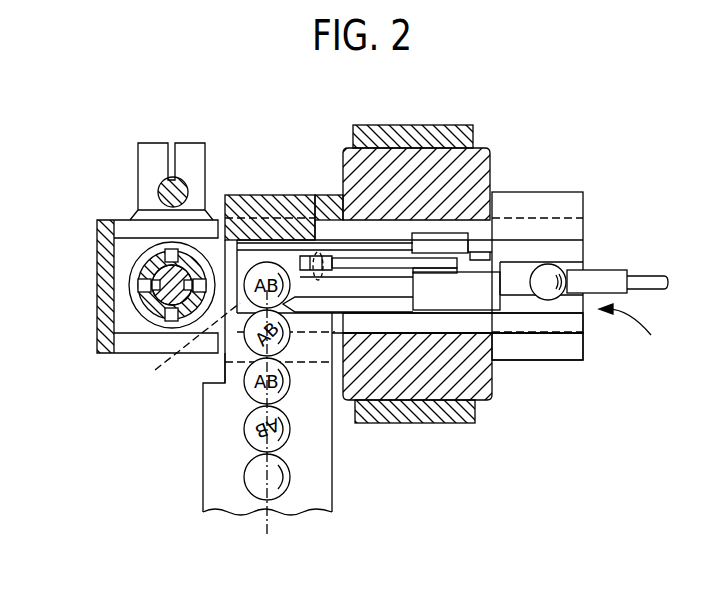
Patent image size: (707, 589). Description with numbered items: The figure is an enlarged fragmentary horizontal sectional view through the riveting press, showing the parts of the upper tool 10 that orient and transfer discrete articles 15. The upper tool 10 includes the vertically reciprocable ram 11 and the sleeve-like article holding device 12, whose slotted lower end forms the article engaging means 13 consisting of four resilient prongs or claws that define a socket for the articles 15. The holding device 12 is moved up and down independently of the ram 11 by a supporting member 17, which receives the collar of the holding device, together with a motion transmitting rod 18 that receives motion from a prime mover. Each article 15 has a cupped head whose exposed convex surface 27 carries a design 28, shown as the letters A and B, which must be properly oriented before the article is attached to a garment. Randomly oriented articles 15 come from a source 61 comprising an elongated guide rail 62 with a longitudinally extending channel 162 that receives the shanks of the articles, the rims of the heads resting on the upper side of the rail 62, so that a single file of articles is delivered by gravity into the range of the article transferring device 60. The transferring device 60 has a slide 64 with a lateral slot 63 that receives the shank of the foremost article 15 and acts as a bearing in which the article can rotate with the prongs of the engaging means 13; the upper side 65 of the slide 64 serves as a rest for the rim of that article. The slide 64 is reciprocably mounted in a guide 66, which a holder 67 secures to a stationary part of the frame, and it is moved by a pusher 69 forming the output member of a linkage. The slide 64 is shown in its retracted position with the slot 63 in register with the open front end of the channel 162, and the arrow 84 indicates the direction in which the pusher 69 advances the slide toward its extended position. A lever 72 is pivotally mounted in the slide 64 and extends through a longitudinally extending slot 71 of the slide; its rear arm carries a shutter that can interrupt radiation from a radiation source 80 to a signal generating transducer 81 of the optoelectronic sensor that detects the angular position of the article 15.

The upper tool 10 is at (48, 215).
The ram 11 is at (170, 277).
The article holding device 12 is at (143, 271).
The article engaging means 13 is at (165, 300).
The article 15 is at (286, 493).
The supporting member 17 is at (103, 318).
The motion transmitting rod 18 is at (182, 189).
The convex surface 27 is at (255, 490).
The design 28 is at (288, 481).
The article transferring device 60 is at (545, 362).
The source of supply 61 is at (333, 488).
The guide rail 62 is at (215, 448).
The lateral slot 63 is at (198, 310).
The slide 64 is at (570, 257).
The upper side 65 is at (297, 283).
The guide 66 is at (583, 348).
The holder 67 is at (447, 413).
The pusher 69 is at (605, 281).
The longitudinally extending slot 71 is at (454, 252).
The lever 72 is at (346, 263).
The radiation source 80 is at (437, 243).
The signal generating transducer 81 is at (427, 277).
The arrow 84 is at (628, 335).
The channel 162 is at (263, 428).